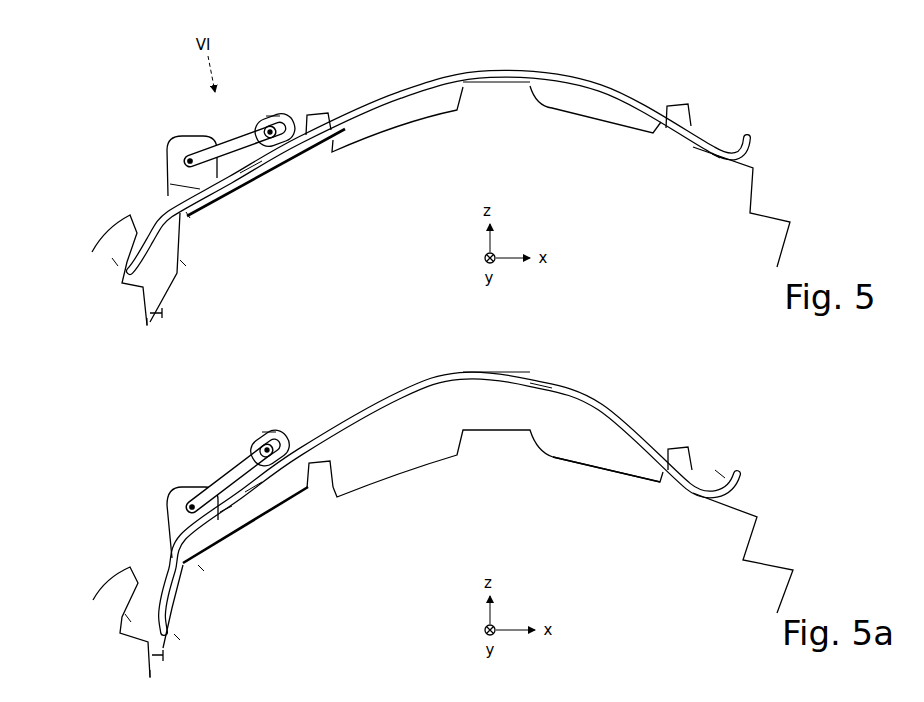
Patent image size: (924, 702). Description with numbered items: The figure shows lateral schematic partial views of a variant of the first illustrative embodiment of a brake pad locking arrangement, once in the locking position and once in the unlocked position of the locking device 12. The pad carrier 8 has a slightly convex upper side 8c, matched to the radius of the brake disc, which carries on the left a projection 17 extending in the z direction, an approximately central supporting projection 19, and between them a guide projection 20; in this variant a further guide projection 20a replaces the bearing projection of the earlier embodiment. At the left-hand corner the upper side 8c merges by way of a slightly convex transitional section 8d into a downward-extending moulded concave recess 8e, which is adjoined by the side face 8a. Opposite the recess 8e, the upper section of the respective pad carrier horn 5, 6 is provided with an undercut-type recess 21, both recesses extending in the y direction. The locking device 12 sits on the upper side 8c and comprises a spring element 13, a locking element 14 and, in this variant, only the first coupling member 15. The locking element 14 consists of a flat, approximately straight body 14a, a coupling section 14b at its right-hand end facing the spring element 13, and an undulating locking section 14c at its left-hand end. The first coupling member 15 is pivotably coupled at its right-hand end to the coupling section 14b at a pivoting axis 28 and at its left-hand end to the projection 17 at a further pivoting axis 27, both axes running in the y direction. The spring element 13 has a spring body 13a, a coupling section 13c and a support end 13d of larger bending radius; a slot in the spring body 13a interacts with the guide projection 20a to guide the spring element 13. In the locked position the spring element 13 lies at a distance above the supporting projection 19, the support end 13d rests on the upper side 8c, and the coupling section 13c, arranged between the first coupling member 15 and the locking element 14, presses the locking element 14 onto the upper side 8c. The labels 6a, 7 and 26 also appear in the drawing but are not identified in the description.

In FIG. 5, the pad carrier horn 5 is at (96, 263).
In FIG. 5A, the pad carrier horn 5 is at (93, 619).
In FIG. 5, the pad carrier horn 6 is at (115, 235).
In FIG. 5A, the pad carrier horn 6 is at (127, 587).
In FIG. 5, the body edge 6a is at (150, 320).
In FIG. 5A, the body edge 6a is at (153, 672).
In FIG. 5, the cladding part 7 is at (595, 92).
In FIG. 5A, the cladding part 7 is at (606, 424).
In FIG. 5, the pad carrier 8 is at (578, 120).
In FIG. 5A, the pad carrier 8 is at (587, 457).
In FIG. 5, the side face 8a is at (150, 313).
In FIG. 5A, the side face 8a is at (152, 655).
In FIG. 5, the upper side 8c is at (753, 168).
In FIG. 5A, the upper side 8c is at (743, 553).
In FIG. 5, the transitional section 8d is at (188, 214).
In FIG. 5A, the transitional section 8d is at (200, 567).
In FIG. 5, the recess 8e is at (183, 263).
In FIG. 5A, the recess 8e is at (177, 637).
In FIG. 5, the locking device 12 is at (378, 78).
In FIG. 5A, the locking device 12 is at (380, 368).
In FIG. 5, the spring element 13 is at (425, 80).
In FIG. 5A, the spring element 13 is at (443, 370).
In FIG. 5, the spring body 13a is at (387, 105).
In FIG. 5A, the spring body 13a is at (540, 383).
In FIG. 5, the coupling section 13c is at (253, 177).
In FIG. 5A, the coupling section 13c is at (253, 490).
In FIG. 5, the support end 13d is at (715, 152).
In FIG. 5A, the support end 13d is at (720, 470).
In FIG. 5, the locking element 14 is at (408, 183).
In FIG. 5A, the locking element 14 is at (406, 524).
In FIG. 5, the body 14a is at (200, 189).
In FIG. 5A, the body 14a is at (230, 510).
In FIG. 5, the coupling section 14b is at (273, 114).
In FIG. 5A, the coupling section 14b is at (267, 430).
In FIG. 5, the locking section 14c is at (165, 258).
In FIG. 5A, the locking section 14c is at (165, 587).
In FIG. 5, the first coupling member 15 is at (203, 111).
In FIG. 5A, the first coupling member 15 is at (196, 458).
In FIG. 5, the projection 17 is at (168, 150).
In FIG. 5A, the projection 17 is at (173, 497).
In FIG. 5, the supporting projection 19 is at (500, 93).
In FIG. 5A, the supporting projection 19 is at (483, 443).
In FIG. 5, the guide projection 20 is at (318, 108).
In FIG. 5A, the guide projection 20 is at (320, 463).
In FIG. 5, the guide projection 20a is at (682, 110).
In FIG. 5A, the guide projection 20a is at (687, 450).
In FIG. 5, the undercut-type recess 21 is at (112, 262).
In FIG. 5A, the undercut-type recess 21 is at (130, 618).
In FIG. 5A, the pivot loop 26 is at (250, 437).
In FIG. 5, the pivoting axis 27 is at (190, 160).
In FIG. 5A, the pivoting axis 27 is at (192, 507).
In FIG. 5, the pivoting axis 28 is at (264, 120).